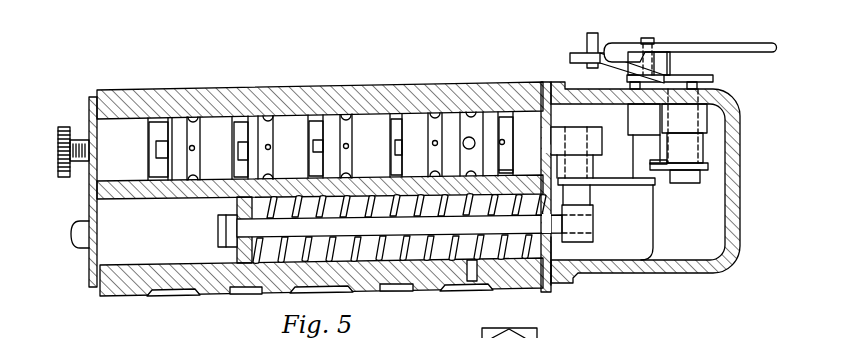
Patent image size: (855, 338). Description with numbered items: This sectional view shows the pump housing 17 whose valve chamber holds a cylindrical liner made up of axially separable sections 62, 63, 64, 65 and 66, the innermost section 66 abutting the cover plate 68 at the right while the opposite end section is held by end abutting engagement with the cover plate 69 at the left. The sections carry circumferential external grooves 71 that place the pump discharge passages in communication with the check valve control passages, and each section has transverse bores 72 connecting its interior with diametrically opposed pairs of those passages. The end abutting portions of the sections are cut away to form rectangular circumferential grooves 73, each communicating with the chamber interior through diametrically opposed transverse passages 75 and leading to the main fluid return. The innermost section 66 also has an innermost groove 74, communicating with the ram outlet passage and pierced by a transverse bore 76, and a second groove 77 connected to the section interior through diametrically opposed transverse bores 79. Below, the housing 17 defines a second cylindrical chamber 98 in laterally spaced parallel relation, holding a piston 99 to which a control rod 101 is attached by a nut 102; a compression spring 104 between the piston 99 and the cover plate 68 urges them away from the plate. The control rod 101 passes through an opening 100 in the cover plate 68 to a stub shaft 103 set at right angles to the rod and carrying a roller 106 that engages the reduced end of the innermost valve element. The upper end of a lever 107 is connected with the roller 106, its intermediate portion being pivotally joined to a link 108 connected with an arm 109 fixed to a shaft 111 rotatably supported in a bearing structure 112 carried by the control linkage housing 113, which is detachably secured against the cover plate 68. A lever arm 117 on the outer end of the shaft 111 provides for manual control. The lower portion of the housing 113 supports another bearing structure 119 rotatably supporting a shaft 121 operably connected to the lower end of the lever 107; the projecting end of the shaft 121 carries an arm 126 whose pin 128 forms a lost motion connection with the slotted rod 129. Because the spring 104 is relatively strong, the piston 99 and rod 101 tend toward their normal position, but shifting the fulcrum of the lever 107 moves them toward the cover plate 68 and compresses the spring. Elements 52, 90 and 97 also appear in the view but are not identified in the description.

The pump housing 17 is at (118, 297).
The indicator window 52 is at (522, 332).
The liner section 62 is at (118, 128).
The liner section 63 is at (214, 128).
The liner section 64 is at (290, 126).
The liner section 65 is at (366, 124).
The innermost liner section 66 is at (528, 122).
The cover plate 68 is at (548, 292).
The cover plate 69 is at (89, 190).
The circumferential external grooves 71 is at (193, 117).
The transverse bores 72 is at (195, 148).
The circumferential external grooves 73 is at (253, 122).
The innermost groove 74 is at (513, 170).
The transverse passages 75 is at (238, 158).
The transverse bore 76 is at (505, 142).
The second groove 77 is at (475, 108).
The transverse bores 79 is at (463, 143).
The rod 90 is at (553, 116).
The adjusting knob 97 is at (58, 138).
The second cylindrical chamber 98 is at (143, 201).
The piston 99 is at (236, 210).
The opening 100 is at (552, 246).
The control rod 101 is at (305, 242).
The nut 102 is at (226, 244).
The stub shaft 103 is at (593, 238).
The compression spring 104 is at (372, 216).
The roller 106 is at (598, 128).
The lever 107 is at (592, 192).
The link 108 is at (642, 182).
The arm 109 is at (652, 163).
The shaft 111 is at (676, 185).
The bearing structure 112 is at (680, 132).
The control linkage housing 113 is at (740, 206).
The lever arm 117 is at (570, 60).
The bearing structure 119 is at (628, 136).
The shaft 121 is at (630, 87).
The arm 126 is at (670, 60).
The pin 128 is at (646, 38).
The rod 129 is at (740, 43).